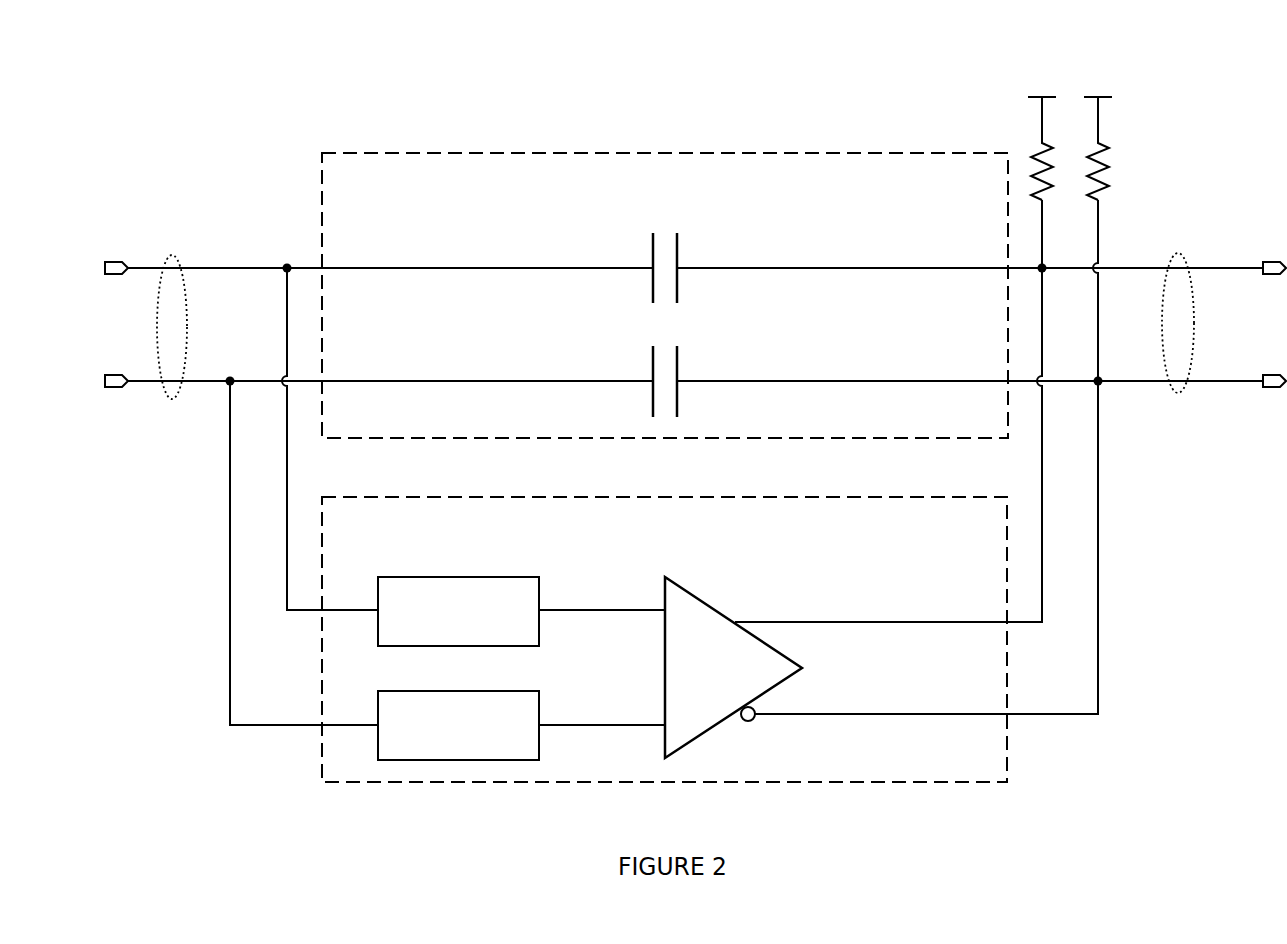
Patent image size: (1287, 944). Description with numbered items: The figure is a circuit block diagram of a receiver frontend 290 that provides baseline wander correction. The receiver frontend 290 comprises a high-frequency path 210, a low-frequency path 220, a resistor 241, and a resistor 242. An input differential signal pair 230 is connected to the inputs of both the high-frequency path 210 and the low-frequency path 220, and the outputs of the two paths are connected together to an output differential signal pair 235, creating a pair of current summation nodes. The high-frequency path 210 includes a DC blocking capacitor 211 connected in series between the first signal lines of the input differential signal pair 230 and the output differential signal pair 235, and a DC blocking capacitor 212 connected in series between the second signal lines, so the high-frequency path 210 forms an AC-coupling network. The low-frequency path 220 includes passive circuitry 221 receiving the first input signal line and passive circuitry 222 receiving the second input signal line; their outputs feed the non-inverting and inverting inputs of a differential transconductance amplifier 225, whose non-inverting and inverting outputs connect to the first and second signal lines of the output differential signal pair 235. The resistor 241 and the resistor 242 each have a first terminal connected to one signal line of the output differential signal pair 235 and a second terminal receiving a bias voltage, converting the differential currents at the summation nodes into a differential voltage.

The receiver frontend 290 is at (83, 80).
The input differential signal pair 230 is at (172, 255).
The output differential signal pair 235 is at (1180, 253).
The high-frequency path 210 is at (833, 186).
The DC blocking capacitor 211 is at (677, 238).
The DC blocking capacitor 212 is at (677, 352).
The low-frequency path 220 is at (830, 530).
The passive circuitry 221 is at (532, 577).
The passive circuitry 222 is at (532, 691).
The differential transconductance amplifier 225 is at (730, 675).
The resistor 241 is at (1038, 149).
The resistor 242 is at (1103, 144).